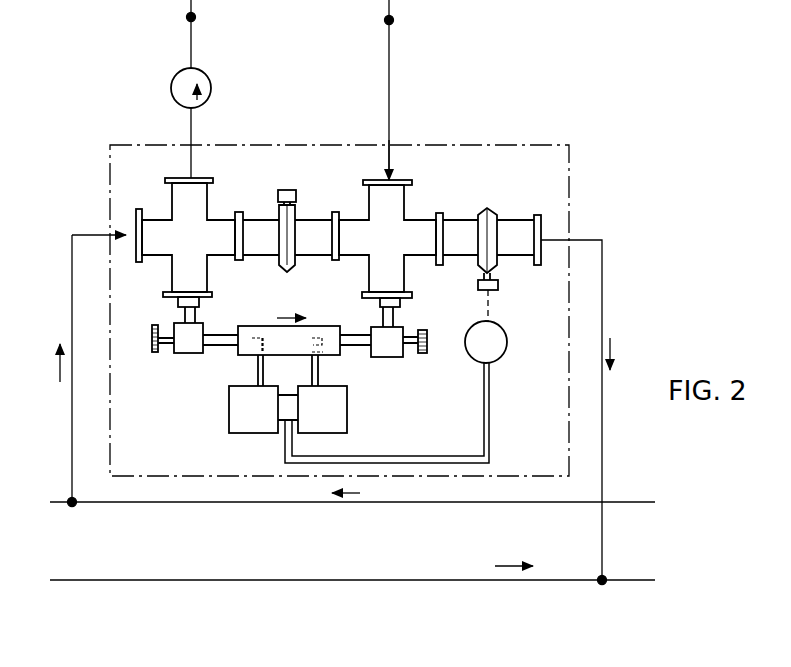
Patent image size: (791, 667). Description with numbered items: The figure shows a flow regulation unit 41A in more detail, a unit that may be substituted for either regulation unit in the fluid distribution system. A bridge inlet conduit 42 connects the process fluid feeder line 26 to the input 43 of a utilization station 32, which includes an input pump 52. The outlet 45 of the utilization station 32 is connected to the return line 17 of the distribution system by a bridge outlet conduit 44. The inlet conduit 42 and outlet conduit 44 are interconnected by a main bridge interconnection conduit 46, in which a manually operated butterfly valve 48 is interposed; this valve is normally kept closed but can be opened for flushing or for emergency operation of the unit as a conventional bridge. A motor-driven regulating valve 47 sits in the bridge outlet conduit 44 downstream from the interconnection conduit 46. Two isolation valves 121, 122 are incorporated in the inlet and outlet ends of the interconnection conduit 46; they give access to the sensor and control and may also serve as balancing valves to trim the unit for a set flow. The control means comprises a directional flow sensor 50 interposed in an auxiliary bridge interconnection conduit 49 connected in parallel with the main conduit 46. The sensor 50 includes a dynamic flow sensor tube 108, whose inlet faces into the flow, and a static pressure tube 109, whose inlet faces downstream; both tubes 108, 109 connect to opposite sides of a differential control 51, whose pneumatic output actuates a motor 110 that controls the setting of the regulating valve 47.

The return line 17 is at (632, 580).
The process fluid feeder line 26 is at (447, 503).
The utilization station 32 is at (315, 69).
The flow regulation unit 41A is at (110, 185).
The bridge inlet conduit 42 is at (160, 255).
The input 43 is at (207, 198).
The bridge outlet conduit 44 is at (535, 228).
The outlet 45 is at (404, 200).
The main bridge interconnection conduit 46 is at (313, 257).
The motor-driven regulating valve 47 is at (498, 275).
The manually operated butterfly valve 48 is at (295, 208).
The auxiliary bridge interconnection conduit 49 is at (220, 347).
The directional flow sensor 50 is at (276, 308).
The differential control 51 is at (357, 414).
The input pump 52 is at (207, 74).
The dynamic flow sensor tube 108 is at (257, 370).
The static pressure tube 109 is at (318, 369).
The motor 110 is at (503, 357).
The isolation valve 121 is at (180, 352).
The isolation valve 122 is at (395, 333).